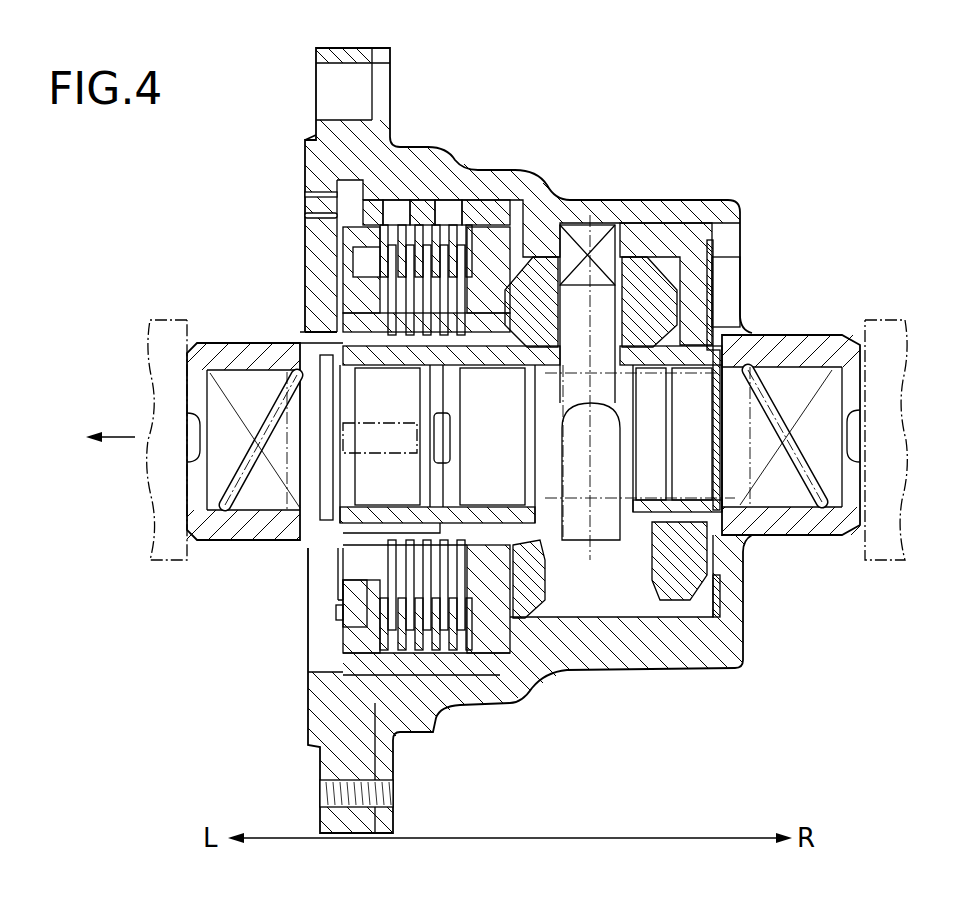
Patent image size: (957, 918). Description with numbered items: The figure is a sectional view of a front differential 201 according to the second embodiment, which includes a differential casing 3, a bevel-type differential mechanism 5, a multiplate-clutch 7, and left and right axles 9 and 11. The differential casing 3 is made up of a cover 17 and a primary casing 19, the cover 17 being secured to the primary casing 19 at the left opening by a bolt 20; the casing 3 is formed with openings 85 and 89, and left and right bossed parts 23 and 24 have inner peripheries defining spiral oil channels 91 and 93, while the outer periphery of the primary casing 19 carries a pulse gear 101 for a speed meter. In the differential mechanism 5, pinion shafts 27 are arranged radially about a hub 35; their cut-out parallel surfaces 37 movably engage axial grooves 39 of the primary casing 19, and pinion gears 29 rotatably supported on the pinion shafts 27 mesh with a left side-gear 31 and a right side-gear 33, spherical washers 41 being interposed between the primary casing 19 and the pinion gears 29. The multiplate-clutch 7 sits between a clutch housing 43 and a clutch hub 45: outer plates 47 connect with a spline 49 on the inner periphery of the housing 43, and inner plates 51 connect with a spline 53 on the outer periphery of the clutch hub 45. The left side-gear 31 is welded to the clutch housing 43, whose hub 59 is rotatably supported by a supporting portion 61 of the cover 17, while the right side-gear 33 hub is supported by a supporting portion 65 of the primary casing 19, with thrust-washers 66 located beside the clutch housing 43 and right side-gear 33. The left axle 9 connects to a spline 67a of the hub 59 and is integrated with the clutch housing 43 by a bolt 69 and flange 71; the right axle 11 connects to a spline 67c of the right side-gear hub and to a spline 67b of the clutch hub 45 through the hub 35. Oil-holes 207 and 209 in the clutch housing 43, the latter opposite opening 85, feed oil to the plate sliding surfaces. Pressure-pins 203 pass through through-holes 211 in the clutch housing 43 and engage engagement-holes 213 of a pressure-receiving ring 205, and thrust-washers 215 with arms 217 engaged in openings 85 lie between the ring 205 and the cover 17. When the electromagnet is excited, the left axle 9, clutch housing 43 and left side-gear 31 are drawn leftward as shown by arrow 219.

The differential casing 3 is at (366, 42).
The bevel-type differential mechanism 5 is at (610, 696).
The multiplate-clutch 7 is at (411, 158).
The left axle 9 is at (158, 318).
The right axle 11 is at (885, 320).
The cover 17 is at (296, 160).
The primary casing 19 is at (514, 162).
The bolt 20 is at (388, 797).
The bossed part 23 is at (227, 540).
The bossed part 24 is at (808, 532).
The pinion shaft 27 is at (610, 316).
The pinion gear 29 is at (550, 304).
The left side-gear 31 is at (513, 560).
The right side-gear 33 is at (668, 553).
The hub 35 is at (587, 528).
The parallel surface 37 is at (594, 226).
The axial groove 39 is at (642, 230).
The spherical washer 41 is at (676, 272).
The clutch housing 43 is at (312, 134).
The clutch hub 45 is at (556, 362).
The outer plate 47 is at (350, 638).
The spline 49 is at (352, 672).
The inner plate 51 is at (350, 548).
The spline 53 is at (300, 338).
The hub 59 is at (367, 364).
The supporting portion 61 is at (327, 500).
The supporting portion 65 is at (714, 504).
The thrust-washer 66 is at (722, 587).
The spline 67a is at (347, 508).
The spline 67b is at (506, 504).
The spline 67c is at (698, 372).
The bolt 69 is at (450, 417).
The flange 71 is at (435, 485).
The opening 85 is at (330, 613).
The opening 89 is at (735, 273).
The spiral oil channel 91 is at (280, 392).
The spiral oil channel 93 is at (765, 362).
The pulse gear 101 is at (707, 207).
The front differential 201 is at (810, 124).
The pressure-pin 203 is at (352, 212).
The pressure-receiving ring 205 is at (336, 222).
The oil-hole 207 is at (450, 208).
The oil-hole 209 is at (365, 566).
The through-hole 211 is at (345, 292).
The engagement-hole 213 is at (355, 252).
The thrust-washer 215 is at (364, 630).
The arm 217 is at (312, 236).
The arrow 219 is at (125, 430).